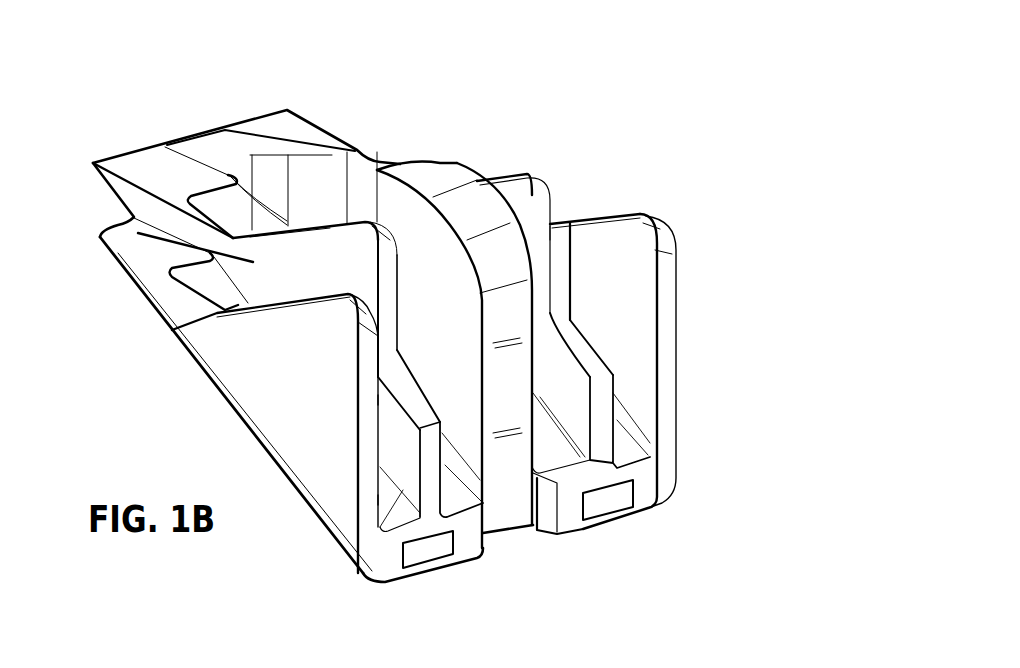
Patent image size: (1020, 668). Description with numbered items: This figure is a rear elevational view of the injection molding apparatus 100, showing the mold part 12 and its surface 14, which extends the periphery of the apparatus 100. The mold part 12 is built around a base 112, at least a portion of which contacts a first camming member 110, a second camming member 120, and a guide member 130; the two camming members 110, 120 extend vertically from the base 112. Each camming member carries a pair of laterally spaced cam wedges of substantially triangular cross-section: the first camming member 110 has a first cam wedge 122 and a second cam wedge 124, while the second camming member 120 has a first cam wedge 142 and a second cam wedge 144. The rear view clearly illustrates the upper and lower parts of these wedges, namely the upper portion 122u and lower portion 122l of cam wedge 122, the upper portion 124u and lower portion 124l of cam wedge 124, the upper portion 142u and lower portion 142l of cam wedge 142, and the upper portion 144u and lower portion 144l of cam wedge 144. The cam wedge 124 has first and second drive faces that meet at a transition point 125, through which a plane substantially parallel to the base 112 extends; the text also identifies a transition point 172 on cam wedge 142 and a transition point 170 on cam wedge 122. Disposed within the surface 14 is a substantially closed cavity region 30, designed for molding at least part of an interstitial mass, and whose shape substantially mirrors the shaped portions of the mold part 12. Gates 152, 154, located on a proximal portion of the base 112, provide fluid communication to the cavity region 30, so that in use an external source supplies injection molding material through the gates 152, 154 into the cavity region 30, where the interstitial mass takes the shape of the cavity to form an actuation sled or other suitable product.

The injection molding apparatus 100 is at (616, 85).
The mold part 12 is at (589, 147).
The surface 14 is at (432, 170).
The cavity region 30 is at (138, 233).
The first camming member 110 is at (353, 332).
The base 112 is at (204, 378).
The second camming member 120 is at (684, 324).
The first cam wedge 122 is at (388, 313).
The upper portion 122u is at (402, 270).
The lower portion 122l is at (437, 455).
The second cam wedge 124 is at (273, 308).
The upper portion 124u is at (373, 400).
The lower portion 124l is at (368, 500).
The transition point 125 is at (181, 340).
The guide member 130 is at (455, 163).
The first cam wedge 142 is at (568, 270).
The upper portion 142u is at (562, 240).
The lower portion 142l is at (610, 397).
The second cam wedge 144 is at (670, 266).
The upper portion 144u is at (608, 218).
The lower portion 144l is at (665, 438).
The gate 152 is at (431, 580).
The gate 154 is at (613, 538).
The transition point 170 is at (562, 310).
The transition point 172 is at (400, 366).